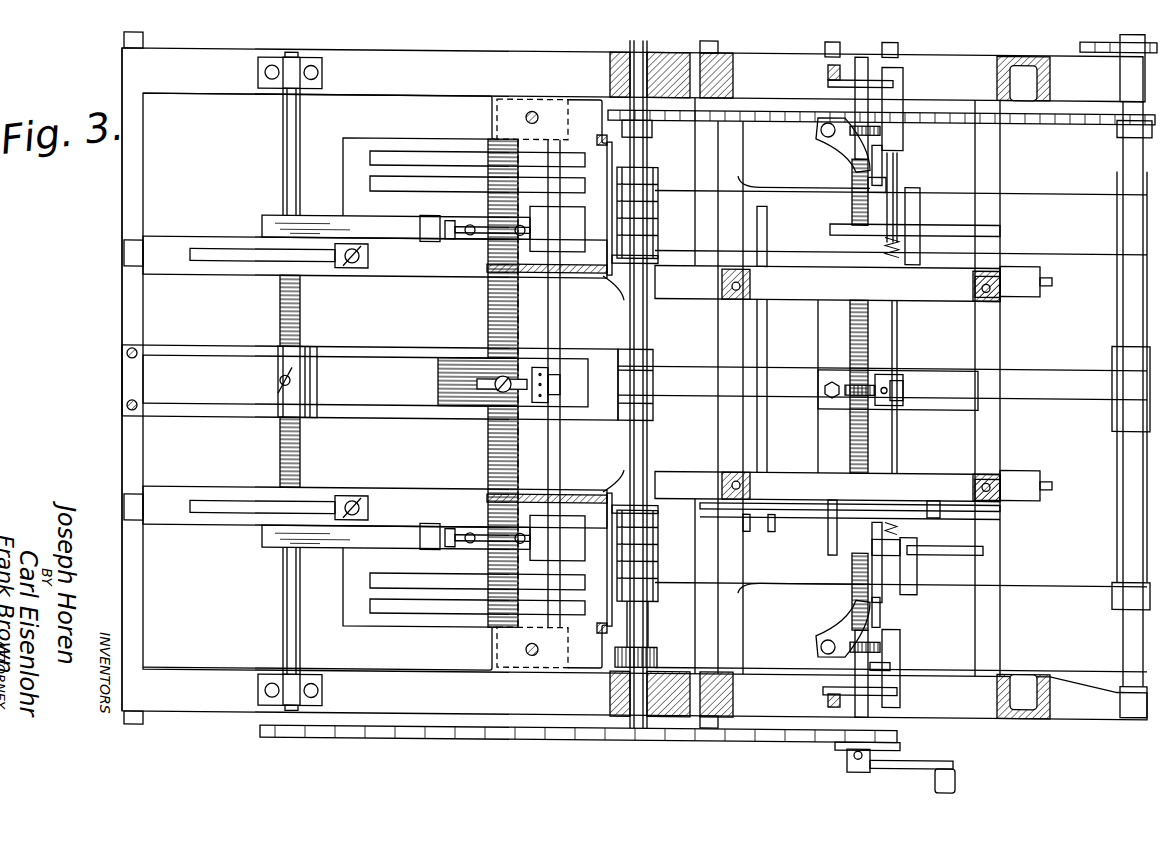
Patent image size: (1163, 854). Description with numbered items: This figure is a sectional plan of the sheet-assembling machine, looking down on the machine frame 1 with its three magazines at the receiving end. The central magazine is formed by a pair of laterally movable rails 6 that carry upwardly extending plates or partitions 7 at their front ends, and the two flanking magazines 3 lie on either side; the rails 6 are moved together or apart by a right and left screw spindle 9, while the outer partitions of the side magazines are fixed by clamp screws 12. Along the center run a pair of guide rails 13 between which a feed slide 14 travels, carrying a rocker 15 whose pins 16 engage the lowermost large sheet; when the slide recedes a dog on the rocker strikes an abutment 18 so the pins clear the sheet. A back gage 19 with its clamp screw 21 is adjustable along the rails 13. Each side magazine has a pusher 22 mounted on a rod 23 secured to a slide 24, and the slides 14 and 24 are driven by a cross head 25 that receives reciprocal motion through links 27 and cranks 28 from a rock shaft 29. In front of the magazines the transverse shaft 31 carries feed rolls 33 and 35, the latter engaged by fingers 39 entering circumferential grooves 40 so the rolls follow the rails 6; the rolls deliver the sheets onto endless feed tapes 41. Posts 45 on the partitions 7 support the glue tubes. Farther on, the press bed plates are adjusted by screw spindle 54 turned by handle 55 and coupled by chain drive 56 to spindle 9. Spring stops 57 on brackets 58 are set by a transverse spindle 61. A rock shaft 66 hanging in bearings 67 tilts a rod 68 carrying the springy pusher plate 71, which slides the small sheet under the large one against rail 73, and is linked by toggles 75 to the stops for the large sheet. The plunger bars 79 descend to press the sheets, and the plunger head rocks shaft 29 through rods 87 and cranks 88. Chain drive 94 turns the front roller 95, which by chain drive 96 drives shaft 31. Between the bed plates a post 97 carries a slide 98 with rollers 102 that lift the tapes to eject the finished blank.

The machine frame 1 is at (433, 90).
The flanking magazine 3 is at (557, 383).
The laterally movable rail 6 is at (238, 280).
The plate or partition 7 is at (522, 280).
The right and left screw spindle 9 is at (278, 470).
The clamp screw 12 is at (536, 112).
The longitudinal guide rail 13 is at (386, 406).
The feed slide 14 is at (460, 408).
The rocker 15 is at (552, 400).
The pin or prick 16 is at (551, 385).
The abutment 18 is at (556, 470).
The back gage 19 is at (318, 386).
The clamp screw 21 is at (280, 381).
The pusher 22 is at (425, 246).
The longitudinally disposed rod 23 is at (314, 226).
The slide 24 is at (470, 246).
The cross head 25 is at (498, 612).
The link 27 is at (786, 672).
The crank 28 is at (900, 656).
The rock shaft 29 is at (902, 628).
The transverse shaft 31 is at (650, 616).
The feed roll 33 is at (647, 422).
The feed roll 35 is at (657, 170).
The finger 39 is at (640, 290).
The circumferential groove 40 is at (658, 262).
The endless feed tape 41 is at (1062, 248).
The post 45 is at (600, 282).
The right and left screw spindle 54 is at (869, 440).
The handle 55 is at (985, 737).
The chain drive 56 is at (622, 742).
The spring stop or abutment 57 is at (1012, 484).
The bracket 58 is at (1032, 288).
The transverse spindle 61 is at (768, 435).
The rock shaft 66 is at (948, 553).
The bearing 67 is at (829, 545).
The rod 68 is at (882, 605).
The springy plate or pusher 71 is at (791, 197).
The rail 73 is at (934, 496).
The adjustable toggle 75 is at (921, 218).
The plunger bar 79 is at (793, 300).
The rod 87 is at (828, 68).
The crank 88 is at (829, 82).
The chain drive 94 is at (1100, 44).
The front roller 95 is at (1125, 155).
The chain drive 96 is at (770, 121).
The post 97 is at (906, 388).
The slide 98 is at (905, 378).
The roller 102 is at (898, 365).